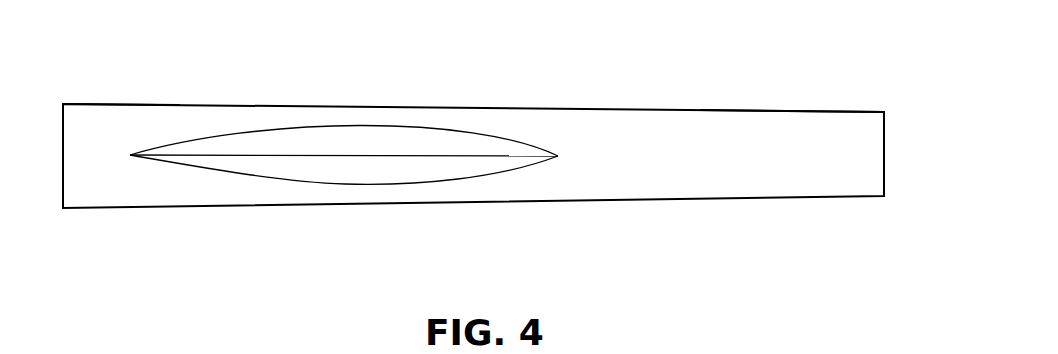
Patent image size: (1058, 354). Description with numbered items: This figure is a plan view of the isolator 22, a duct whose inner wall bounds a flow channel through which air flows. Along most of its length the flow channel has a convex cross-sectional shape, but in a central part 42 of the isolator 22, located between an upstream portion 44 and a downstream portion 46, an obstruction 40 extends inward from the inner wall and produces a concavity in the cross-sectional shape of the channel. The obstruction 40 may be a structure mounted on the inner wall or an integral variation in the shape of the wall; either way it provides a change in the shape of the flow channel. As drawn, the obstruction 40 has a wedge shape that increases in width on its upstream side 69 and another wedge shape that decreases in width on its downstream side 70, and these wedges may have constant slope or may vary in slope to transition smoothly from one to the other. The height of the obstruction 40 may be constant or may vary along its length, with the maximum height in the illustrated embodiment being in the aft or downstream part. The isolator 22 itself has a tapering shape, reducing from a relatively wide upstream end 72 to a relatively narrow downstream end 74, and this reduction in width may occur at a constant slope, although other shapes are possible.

The isolator 22 is at (288, 84).
The upstream portion 44 is at (133, 84).
The central part 42 is at (443, 84).
The downstream portion 46 is at (800, 84).
The upstream end 72 is at (63, 190).
The downstream end 74 is at (884, 154).
The obstruction 40 is at (370, 166).
The upstream side 69 is at (250, 173).
The downstream side 70 is at (502, 175).